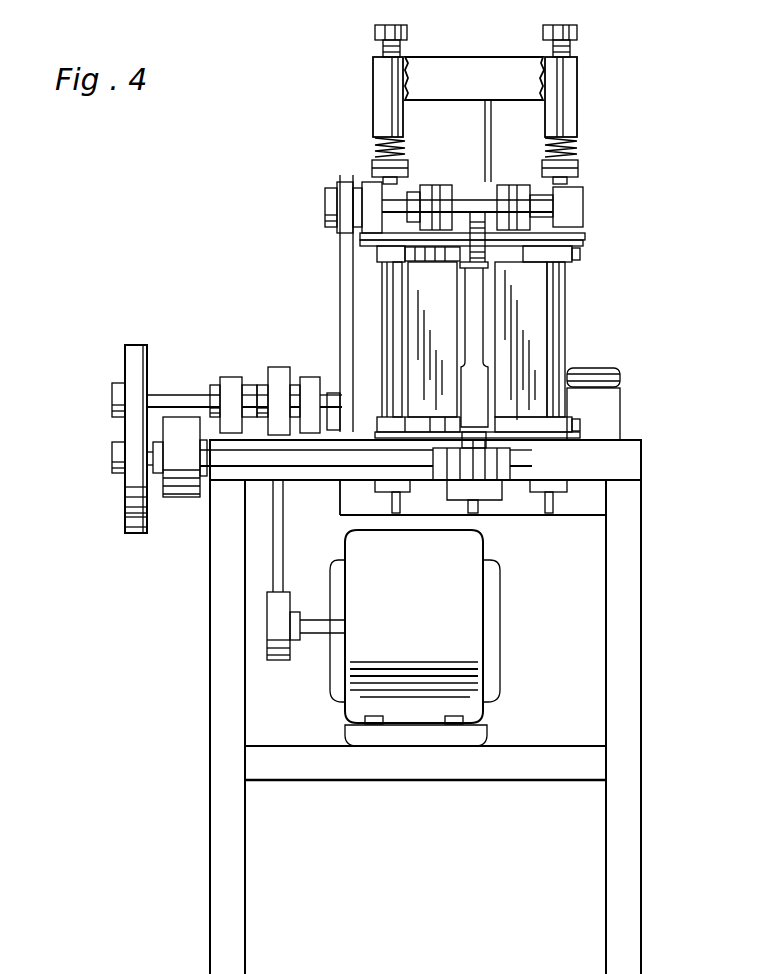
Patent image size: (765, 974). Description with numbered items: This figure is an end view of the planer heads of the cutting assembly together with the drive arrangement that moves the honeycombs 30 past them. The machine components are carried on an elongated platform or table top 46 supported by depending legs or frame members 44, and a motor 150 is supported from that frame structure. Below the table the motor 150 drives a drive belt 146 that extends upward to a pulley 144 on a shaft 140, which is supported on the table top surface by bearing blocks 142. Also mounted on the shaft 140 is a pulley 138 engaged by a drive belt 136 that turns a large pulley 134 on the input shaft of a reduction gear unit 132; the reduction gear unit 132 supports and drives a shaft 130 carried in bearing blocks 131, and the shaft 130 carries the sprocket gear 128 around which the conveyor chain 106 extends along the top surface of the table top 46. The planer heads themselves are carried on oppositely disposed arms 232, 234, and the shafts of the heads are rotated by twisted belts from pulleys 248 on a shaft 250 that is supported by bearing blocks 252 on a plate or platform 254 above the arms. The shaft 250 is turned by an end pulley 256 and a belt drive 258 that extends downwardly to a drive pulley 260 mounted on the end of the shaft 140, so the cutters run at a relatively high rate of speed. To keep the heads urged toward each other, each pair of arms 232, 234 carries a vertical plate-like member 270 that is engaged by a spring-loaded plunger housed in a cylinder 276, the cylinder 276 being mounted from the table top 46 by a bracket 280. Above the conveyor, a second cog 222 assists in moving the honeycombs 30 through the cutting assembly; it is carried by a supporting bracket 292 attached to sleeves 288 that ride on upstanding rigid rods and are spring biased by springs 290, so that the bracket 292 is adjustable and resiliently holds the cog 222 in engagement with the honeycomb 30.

The honeycomb 30 is at (485, 385).
The supporting legs or frame members 44 is at (620, 676).
The elongated platform or table top 46 is at (641, 447).
The conveyor chain 106 is at (468, 502).
The sprocket gear 128 is at (488, 497).
The shaft 130 is at (305, 484).
The bearing blocks 131 is at (512, 467).
The reduction gear unit 132 is at (187, 498).
The large pulley 134 is at (126, 513).
The drive belt 136 is at (124, 385).
The pulley 138 is at (150, 345).
The shaft 140 is at (170, 394).
The bearing blocks 142 is at (228, 377).
The pulley 144 is at (275, 366).
The drive belt 146 is at (280, 590).
The motor 150 is at (466, 638).
The second cog 222 is at (479, 210).
The arm 232 is at (573, 258).
The arm 234 is at (378, 250).
The pulleys 248 is at (425, 185).
The shaft 250 is at (460, 200).
The bearing blocks 252 is at (576, 204).
The plate or platform 254 is at (582, 244).
The end pulley 256 is at (341, 186).
The belt drive 258 is at (360, 238).
The drive pulley 260 is at (332, 392).
The vertical plate-like member 270 is at (520, 332).
The cylinder 276 is at (615, 370).
The bracket 280 is at (608, 402).
The sleeves 288 is at (380, 72).
The springs 290 is at (378, 152).
The supporting bracket 292 is at (472, 78).